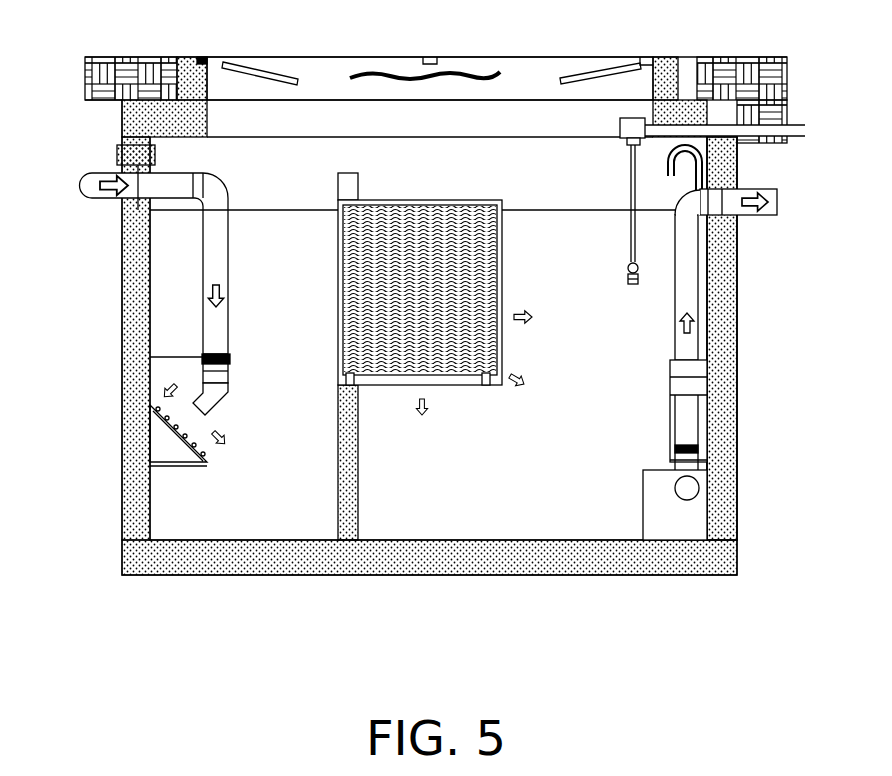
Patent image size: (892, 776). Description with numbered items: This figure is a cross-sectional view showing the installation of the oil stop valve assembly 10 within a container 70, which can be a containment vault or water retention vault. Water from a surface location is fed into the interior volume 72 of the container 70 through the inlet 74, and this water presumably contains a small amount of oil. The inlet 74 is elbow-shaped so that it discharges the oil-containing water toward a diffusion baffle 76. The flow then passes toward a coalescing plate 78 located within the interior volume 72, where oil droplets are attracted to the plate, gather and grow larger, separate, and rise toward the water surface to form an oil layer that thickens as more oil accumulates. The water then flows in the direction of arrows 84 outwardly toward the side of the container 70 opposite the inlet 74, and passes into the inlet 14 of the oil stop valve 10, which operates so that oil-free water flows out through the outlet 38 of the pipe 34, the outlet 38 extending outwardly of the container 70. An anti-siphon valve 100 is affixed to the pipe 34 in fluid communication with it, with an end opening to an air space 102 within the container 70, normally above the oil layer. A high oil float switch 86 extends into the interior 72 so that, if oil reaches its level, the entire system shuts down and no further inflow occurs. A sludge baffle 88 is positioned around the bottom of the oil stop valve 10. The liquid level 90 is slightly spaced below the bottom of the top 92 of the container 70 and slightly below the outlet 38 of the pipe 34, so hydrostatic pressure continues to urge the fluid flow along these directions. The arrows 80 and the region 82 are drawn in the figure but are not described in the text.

The oil stop valve assembly 10 is at (672, 320).
The inlet 14 is at (670, 432).
The pipe 34 is at (700, 265).
The outlet 38 is at (780, 205).
The container 70 is at (722, 318).
The interior volume 72 is at (240, 515).
The inlet 74 is at (82, 190).
The diffusion baffle 76 is at (212, 455).
The coalescing plate 78 is at (343, 320).
The flow path 80 is at (427, 405).
The second chamber 82 is at (448, 540).
The arrows 84 is at (523, 312).
The high oil float switch 86 is at (628, 190).
The sludge baffle 88 is at (643, 510).
The liquid level 90 is at (262, 208).
The top 92 is at (676, 100).
The anti-siphon valve 100 is at (712, 162).
The air space 102 is at (477, 180).